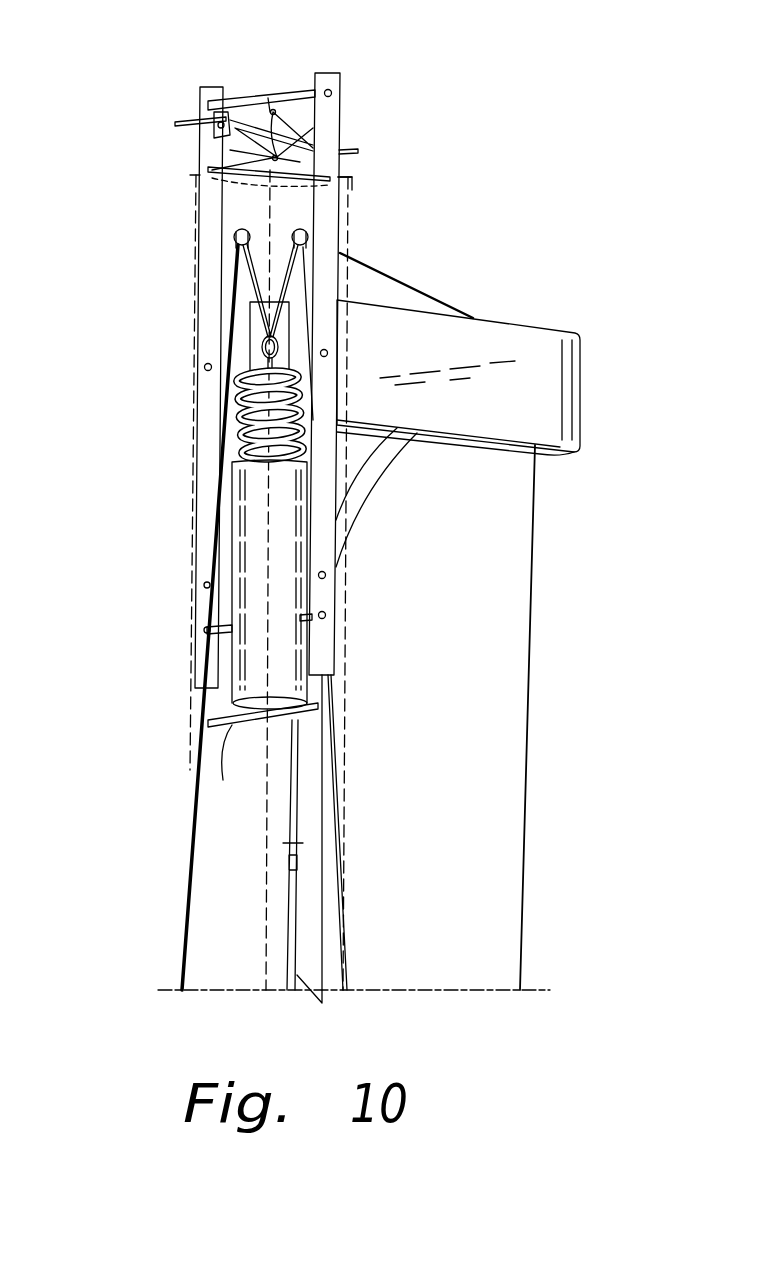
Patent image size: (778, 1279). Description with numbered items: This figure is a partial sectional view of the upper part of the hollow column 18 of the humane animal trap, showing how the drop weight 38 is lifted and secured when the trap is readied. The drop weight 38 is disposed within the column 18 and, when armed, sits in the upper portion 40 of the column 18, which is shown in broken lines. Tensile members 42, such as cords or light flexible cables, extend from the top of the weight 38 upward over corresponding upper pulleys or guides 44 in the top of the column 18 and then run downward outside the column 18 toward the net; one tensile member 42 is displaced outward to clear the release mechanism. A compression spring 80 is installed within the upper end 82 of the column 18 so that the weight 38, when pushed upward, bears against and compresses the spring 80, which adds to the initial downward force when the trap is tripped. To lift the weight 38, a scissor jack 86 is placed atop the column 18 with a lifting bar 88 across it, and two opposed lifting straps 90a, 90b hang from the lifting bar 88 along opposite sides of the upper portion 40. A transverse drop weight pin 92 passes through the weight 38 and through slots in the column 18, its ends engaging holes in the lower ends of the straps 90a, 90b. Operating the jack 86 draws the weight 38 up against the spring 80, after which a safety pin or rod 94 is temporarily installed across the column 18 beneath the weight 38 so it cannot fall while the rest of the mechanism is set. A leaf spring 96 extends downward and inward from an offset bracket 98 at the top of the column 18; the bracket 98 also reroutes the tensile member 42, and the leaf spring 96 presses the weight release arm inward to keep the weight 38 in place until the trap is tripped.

The hollow column 18 is at (190, 720).
The drop weight 38 is at (233, 607).
The upper portion of the column 40 is at (193, 517).
The tensile members 42 is at (322, 262).
The upper pulleys or guides 44 is at (240, 230).
The compression spring 80 is at (238, 443).
The upper end of the column 82 is at (350, 197).
The scissor jack 86 is at (212, 160).
The lifting bar 88 is at (290, 92).
The lifting strap 90a is at (210, 338).
The lifting strap 90b is at (345, 333).
The drop weight pin 92 is at (228, 640).
The safety pin or rod 94 is at (228, 728).
The leaf spring 96 is at (360, 513).
The offset bracket 98 is at (582, 357).